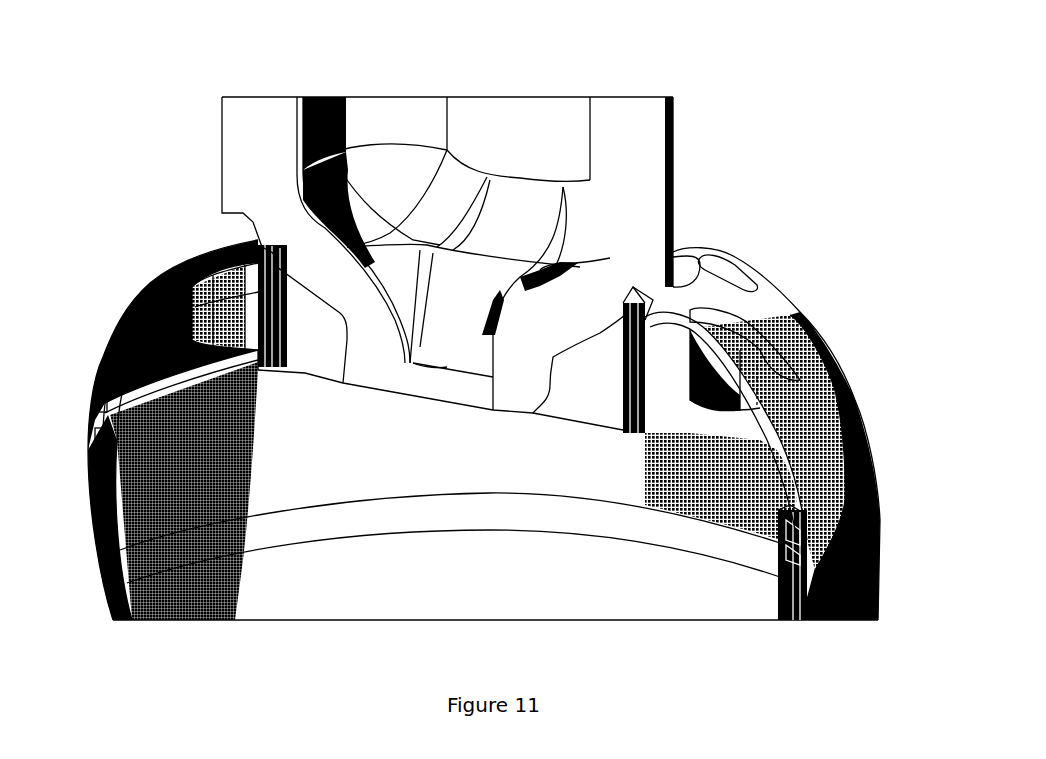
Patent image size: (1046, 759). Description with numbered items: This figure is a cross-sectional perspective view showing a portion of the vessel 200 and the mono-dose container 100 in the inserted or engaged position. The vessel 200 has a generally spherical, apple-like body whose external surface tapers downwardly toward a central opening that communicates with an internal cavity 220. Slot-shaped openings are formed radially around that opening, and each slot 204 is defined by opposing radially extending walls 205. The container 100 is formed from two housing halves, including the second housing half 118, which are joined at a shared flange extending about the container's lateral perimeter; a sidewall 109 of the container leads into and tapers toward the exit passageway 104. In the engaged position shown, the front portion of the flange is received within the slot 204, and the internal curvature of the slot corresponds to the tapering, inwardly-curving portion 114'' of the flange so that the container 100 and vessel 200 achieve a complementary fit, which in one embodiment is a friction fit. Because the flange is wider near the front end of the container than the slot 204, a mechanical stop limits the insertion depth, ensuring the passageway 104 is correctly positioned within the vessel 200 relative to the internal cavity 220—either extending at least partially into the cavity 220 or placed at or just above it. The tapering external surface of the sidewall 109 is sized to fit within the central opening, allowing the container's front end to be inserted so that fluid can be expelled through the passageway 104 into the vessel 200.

The container 100 is at (517, 229).
The second housing half 118 is at (703, 124).
The vessel 200 is at (100, 293).
The passageway 104 is at (437, 387).
The slot 204 is at (292, 297).
The sidewall 109 is at (467, 347).
The narrowing portion of the flange 114'' is at (724, 351).
The radially extending wall 205 is at (587, 380).
The internal cavity 220 is at (512, 579).